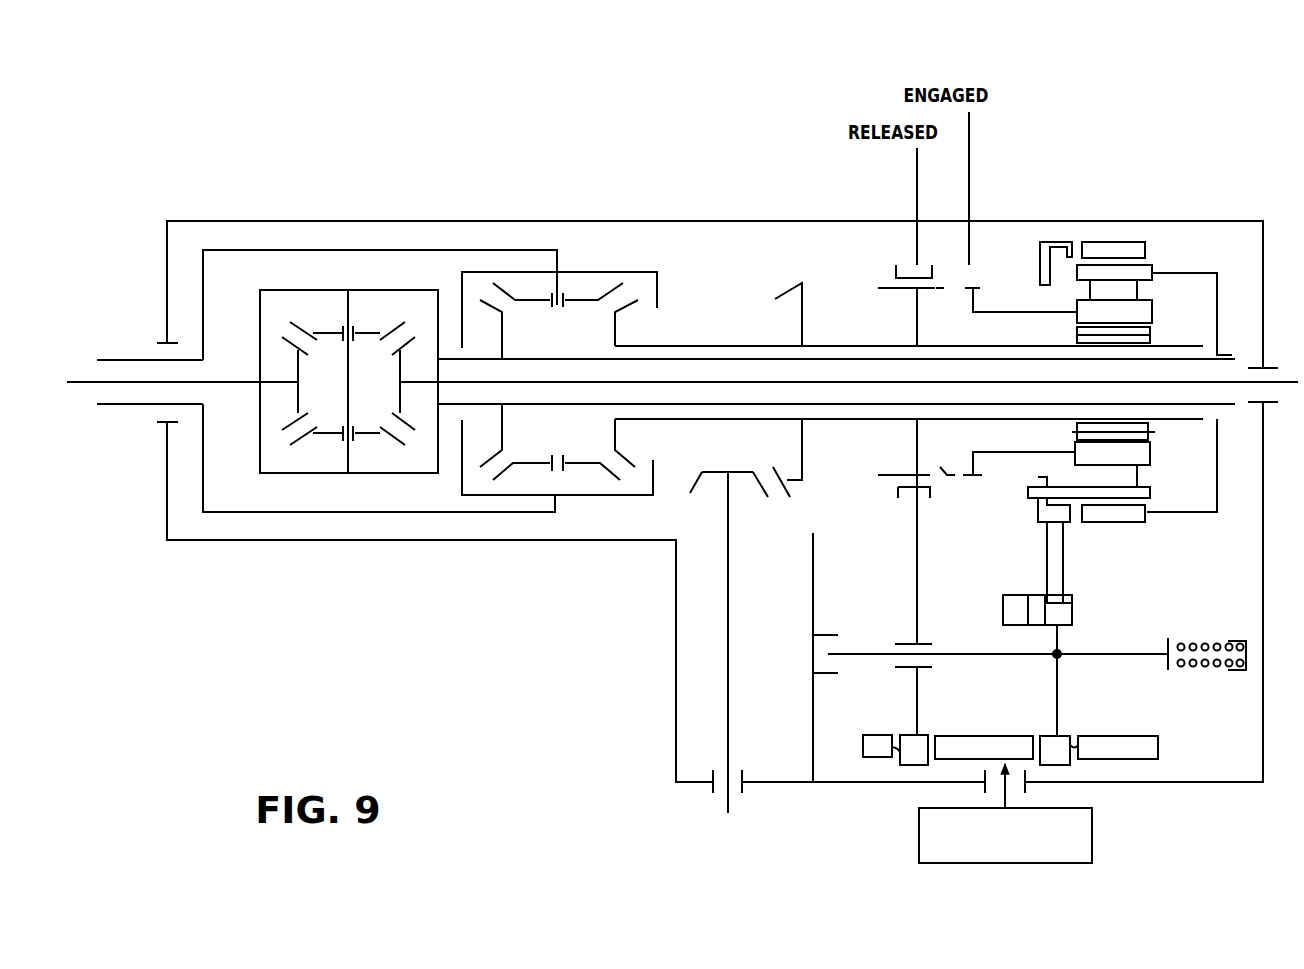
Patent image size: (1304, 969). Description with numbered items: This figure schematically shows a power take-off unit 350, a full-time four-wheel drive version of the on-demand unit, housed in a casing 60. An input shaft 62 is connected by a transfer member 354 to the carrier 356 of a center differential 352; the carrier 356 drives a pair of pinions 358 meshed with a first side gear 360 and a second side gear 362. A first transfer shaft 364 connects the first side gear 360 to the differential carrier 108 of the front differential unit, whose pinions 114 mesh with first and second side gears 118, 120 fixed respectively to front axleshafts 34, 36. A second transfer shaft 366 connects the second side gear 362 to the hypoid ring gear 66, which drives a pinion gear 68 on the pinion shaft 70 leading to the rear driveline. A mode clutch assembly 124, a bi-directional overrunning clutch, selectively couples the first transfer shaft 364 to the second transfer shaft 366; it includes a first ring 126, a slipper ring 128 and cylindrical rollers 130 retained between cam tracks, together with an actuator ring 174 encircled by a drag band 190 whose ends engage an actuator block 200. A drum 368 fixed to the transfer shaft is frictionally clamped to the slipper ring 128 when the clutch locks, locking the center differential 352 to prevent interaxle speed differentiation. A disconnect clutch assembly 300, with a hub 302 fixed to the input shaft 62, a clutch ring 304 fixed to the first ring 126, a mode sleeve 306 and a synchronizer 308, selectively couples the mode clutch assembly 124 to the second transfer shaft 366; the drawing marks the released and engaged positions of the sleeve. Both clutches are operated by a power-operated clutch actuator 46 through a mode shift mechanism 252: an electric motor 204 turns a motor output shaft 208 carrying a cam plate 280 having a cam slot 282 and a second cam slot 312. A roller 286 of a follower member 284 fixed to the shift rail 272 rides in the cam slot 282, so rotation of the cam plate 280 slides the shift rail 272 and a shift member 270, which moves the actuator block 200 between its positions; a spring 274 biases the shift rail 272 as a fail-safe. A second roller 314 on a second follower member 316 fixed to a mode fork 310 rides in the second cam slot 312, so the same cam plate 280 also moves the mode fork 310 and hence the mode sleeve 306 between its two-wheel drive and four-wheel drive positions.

The power take-off unit 350 is at (748, 88).
The casing 60 is at (1028, 220).
The transfer member 354 is at (353, 249).
The front axleshaft 34 is at (123, 380).
The input shaft 62 is at (138, 405).
The front axleshaft 36 is at (537, 380).
The second transfer shaft 366 is at (711, 346).
The first transfer shaft 364 is at (667, 405).
The differential carrier 108 is at (283, 290).
The pinions 114 is at (360, 330).
The first side gear 118 is at (300, 365).
The second side gear 120 is at (397, 398).
The carrier 356 is at (633, 271).
The center differential 352 is at (590, 267).
The pinions 358 is at (538, 302).
The second side gear 362 is at (615, 325).
The first side gear 360 is at (503, 427).
The ring gear 66 is at (778, 296).
The pinion gear 68 is at (692, 493).
The pinion shaft 70 is at (728, 622).
The hub 302 is at (913, 313).
The synchronizer 308 is at (942, 288).
The clutch ring 304 is at (973, 300).
The mode clutch assembly 124 is at (1138, 246).
The drum 368 is at (1092, 242).
The slipper ring 128 is at (1145, 273).
The rollers 130 is at (1130, 288).
The first ring 126 is at (1140, 313).
The disconnect clutch assembly 300 is at (837, 522).
The mode sleeve 306 is at (898, 492).
The mode fork 310 is at (915, 557).
The shift rail 272 is at (868, 650).
The actuator ring 174 is at (1040, 503).
The drag band 190 is at (1058, 558).
The actuator block 200 is at (1072, 612).
The shift member 270 is at (1057, 633).
The spring 274 is at (1200, 645).
The mode shift mechanism 252 is at (866, 764).
The second roller 314 is at (920, 765).
The second cam slot 312 is at (906, 765).
The second follower member 316 is at (915, 693).
The roller 286 is at (1050, 738).
The follower member 284 is at (1057, 693).
The cam slot 282 is at (1078, 735).
The cam plate 280 is at (1154, 743).
The motor output shaft 208 is at (1007, 792).
The electric motor 204 is at (1067, 855).
The clutch actuator 46 is at (1165, 802).